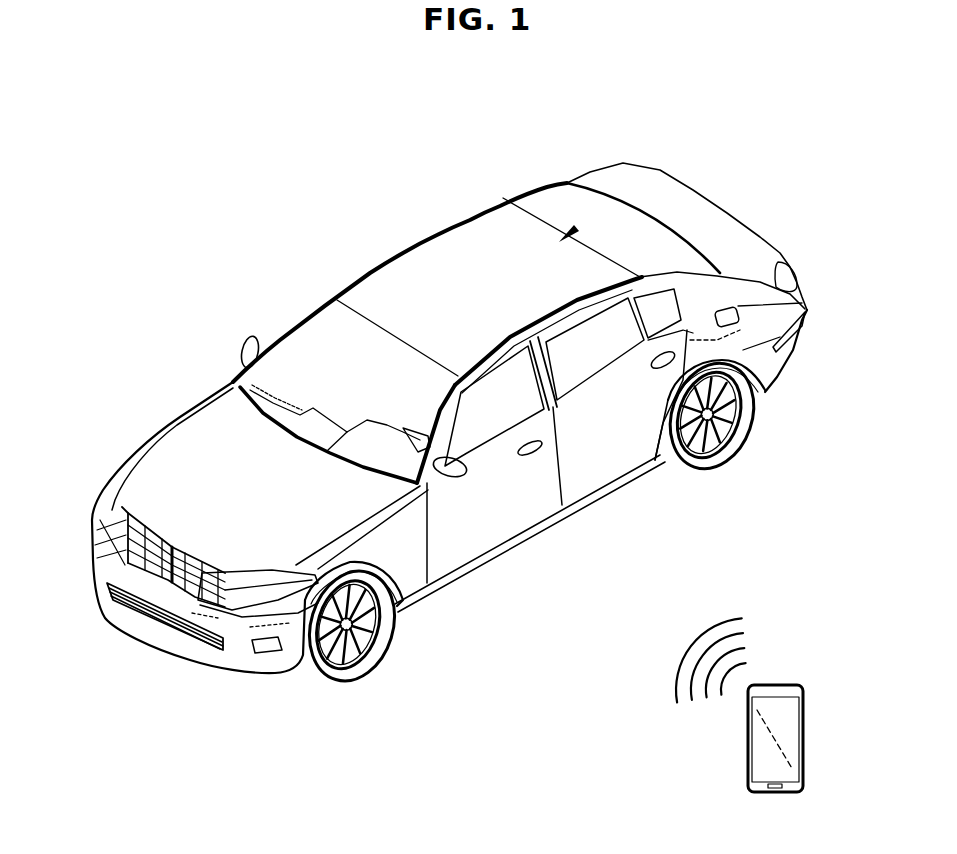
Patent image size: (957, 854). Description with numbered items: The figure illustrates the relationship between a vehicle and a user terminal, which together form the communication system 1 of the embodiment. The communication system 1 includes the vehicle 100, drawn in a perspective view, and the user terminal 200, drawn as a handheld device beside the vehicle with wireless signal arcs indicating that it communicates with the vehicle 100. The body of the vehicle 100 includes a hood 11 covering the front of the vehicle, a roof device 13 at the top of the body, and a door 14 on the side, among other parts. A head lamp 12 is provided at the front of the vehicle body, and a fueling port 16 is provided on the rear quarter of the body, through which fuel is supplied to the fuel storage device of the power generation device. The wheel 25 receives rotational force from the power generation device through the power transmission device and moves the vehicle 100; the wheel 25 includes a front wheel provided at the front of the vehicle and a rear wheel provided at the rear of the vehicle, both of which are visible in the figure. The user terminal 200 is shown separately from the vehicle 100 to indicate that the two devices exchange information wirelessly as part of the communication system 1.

The communication system 1 is at (248, 182).
The vehicle 100 is at (402, 232).
The hood 11 is at (172, 457).
The head lamp 12 is at (97, 565).
The roof device 13 is at (447, 241).
The door 14 is at (505, 508).
The fueling port 16 is at (807, 310).
The wheel 25 is at (743, 403).
The user terminal 200 is at (800, 672).